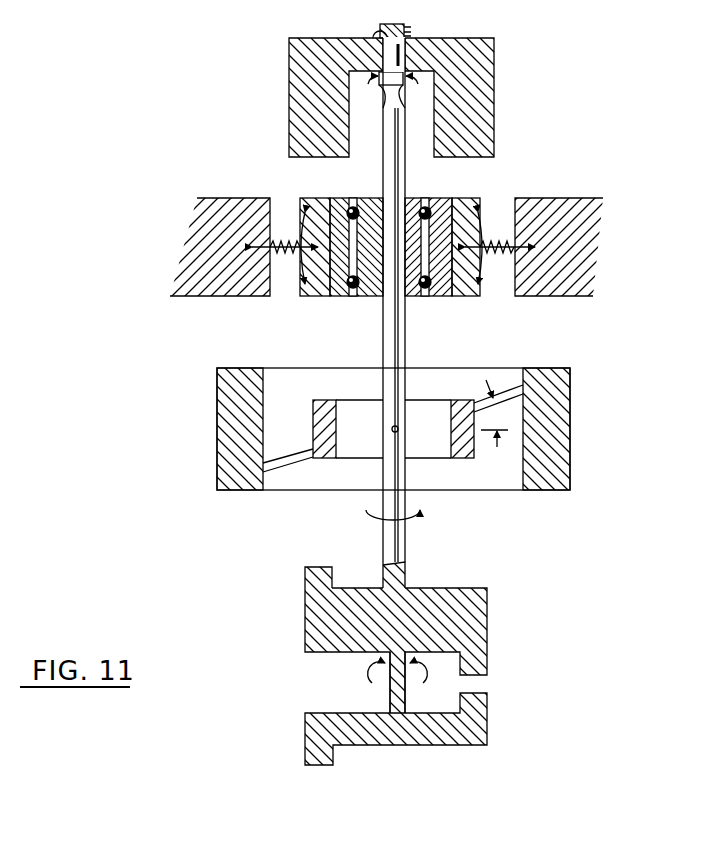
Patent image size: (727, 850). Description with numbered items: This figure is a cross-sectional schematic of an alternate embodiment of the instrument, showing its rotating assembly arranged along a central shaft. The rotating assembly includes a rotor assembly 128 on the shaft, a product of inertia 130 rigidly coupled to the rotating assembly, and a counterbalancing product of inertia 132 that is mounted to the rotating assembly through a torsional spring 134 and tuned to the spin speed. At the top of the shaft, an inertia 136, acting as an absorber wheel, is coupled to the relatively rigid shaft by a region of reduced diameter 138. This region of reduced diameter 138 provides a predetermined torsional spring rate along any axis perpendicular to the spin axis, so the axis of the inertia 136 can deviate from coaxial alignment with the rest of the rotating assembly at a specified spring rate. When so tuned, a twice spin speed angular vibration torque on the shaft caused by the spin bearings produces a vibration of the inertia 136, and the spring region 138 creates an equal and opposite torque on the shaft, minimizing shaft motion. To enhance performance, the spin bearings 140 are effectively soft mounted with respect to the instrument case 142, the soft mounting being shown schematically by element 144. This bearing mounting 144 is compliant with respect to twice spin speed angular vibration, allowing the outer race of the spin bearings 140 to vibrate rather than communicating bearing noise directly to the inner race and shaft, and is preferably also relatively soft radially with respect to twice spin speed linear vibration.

The rotor assembly 128 is at (225, 418).
The product of inertia 130 is at (305, 602).
The counterbalancing product of inertia 132 is at (487, 722).
The torsional spring 134 is at (390, 693).
The inertia 136 is at (494, 97).
The region of reduced diameter 138 is at (383, 96).
The spin bearings 140 is at (340, 200).
The instrument case 142 is at (230, 198).
The soft mounting 144 is at (505, 198).